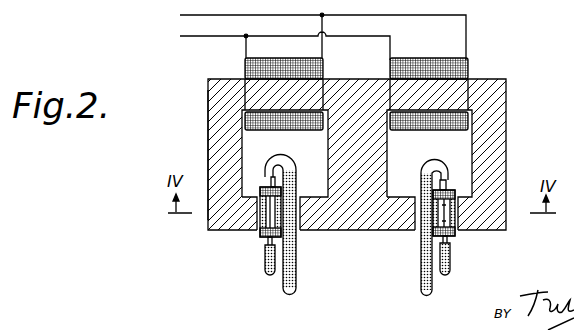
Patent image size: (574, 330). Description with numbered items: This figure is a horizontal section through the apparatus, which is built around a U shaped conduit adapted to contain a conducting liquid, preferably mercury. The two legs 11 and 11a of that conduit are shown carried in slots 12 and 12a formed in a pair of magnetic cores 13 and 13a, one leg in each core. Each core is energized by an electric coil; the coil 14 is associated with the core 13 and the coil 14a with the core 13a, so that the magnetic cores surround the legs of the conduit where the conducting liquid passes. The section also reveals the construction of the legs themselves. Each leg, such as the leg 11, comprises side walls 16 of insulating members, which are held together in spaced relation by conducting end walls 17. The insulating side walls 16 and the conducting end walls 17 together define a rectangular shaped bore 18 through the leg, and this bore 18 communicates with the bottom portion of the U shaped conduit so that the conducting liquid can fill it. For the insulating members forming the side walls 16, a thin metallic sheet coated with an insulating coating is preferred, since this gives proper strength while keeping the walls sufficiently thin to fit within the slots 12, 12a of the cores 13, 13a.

The leg 11 is at (458, 189).
The leg 11a is at (261, 238).
The slot 12 is at (414, 232).
The slot 12a is at (297, 215).
The magnetic core 13 is at (507, 125).
The magnetic core 13a is at (218, 146).
The electric coil 14 is at (470, 68).
The electric coil 14a is at (245, 68).
The side wall 16 is at (451, 240).
The conducting end wall 17 is at (444, 181).
The rectangular shaped bore 18 is at (456, 214).